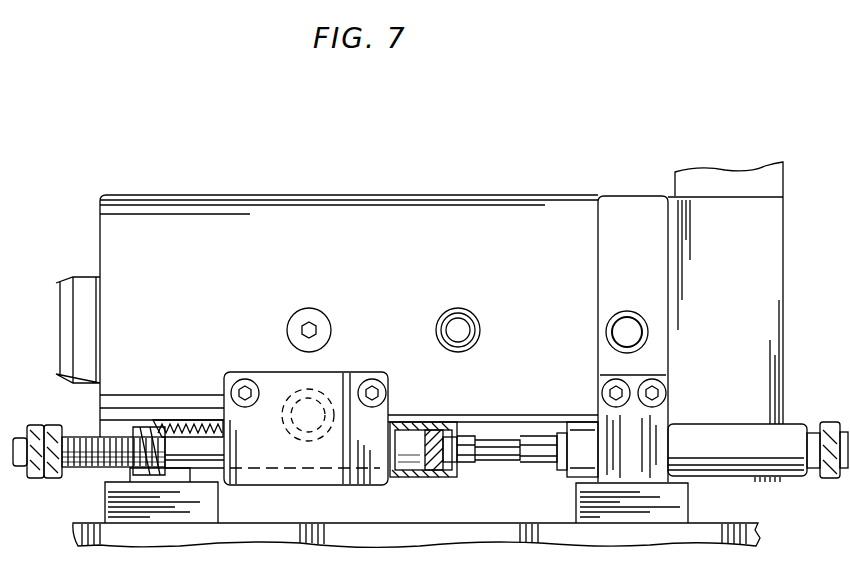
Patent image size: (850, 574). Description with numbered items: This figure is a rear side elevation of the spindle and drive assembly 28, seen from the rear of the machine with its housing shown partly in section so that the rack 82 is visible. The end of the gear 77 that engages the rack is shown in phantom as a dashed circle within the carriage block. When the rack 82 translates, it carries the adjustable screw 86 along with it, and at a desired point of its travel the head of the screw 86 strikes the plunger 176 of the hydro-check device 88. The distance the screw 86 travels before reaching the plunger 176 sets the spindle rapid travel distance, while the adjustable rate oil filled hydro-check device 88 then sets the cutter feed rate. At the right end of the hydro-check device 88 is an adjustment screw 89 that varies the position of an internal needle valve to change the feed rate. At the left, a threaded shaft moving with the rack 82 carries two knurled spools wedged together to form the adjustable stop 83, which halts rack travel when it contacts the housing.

The spindle and drive assembly 28 is at (419, 322).
The gear 77 is at (315, 395).
The rack 82 is at (183, 435).
The adjustable stop 83 is at (37, 478).
The adjustable screw 86 is at (445, 478).
The hydro-check device 88 is at (790, 424).
The adjustment screw 89 is at (830, 478).
The plunger 176 is at (547, 463).